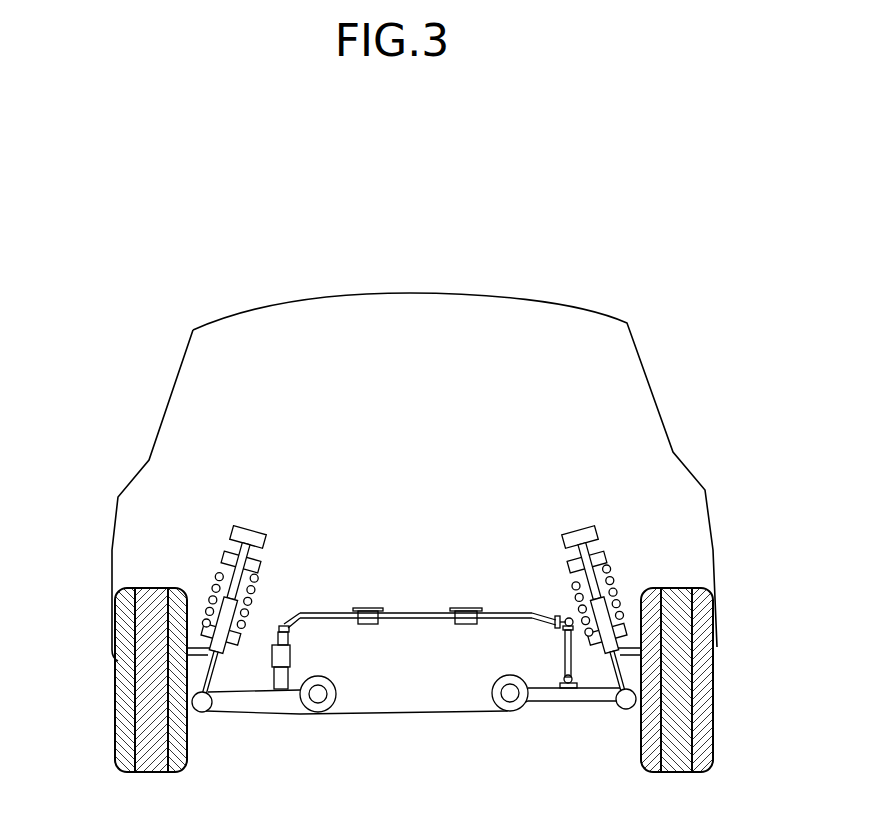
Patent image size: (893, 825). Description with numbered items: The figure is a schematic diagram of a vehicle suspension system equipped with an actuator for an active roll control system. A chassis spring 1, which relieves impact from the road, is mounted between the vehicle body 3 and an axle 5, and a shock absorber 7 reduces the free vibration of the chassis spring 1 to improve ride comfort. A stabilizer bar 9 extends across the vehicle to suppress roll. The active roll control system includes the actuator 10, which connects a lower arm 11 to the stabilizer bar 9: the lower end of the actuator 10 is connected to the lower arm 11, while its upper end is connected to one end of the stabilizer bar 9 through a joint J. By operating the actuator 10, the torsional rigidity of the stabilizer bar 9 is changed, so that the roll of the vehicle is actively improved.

The chassis spring 1 is at (225, 570).
The vehicle body 3 is at (650, 380).
The axle 5 is at (195, 677).
The shock absorber 7 is at (215, 622).
The stabilizer bar 9 is at (432, 620).
The actuator 10 is at (306, 658).
The lower arm 11 is at (227, 702).
The joint J is at (282, 625).